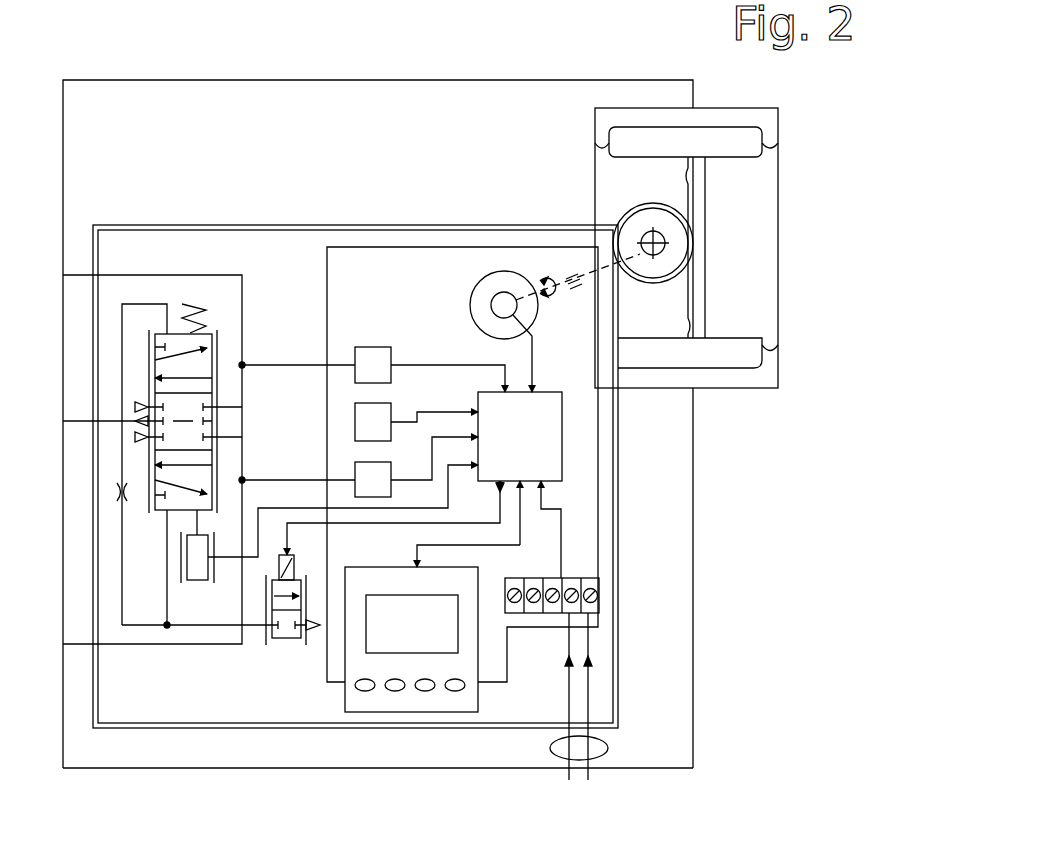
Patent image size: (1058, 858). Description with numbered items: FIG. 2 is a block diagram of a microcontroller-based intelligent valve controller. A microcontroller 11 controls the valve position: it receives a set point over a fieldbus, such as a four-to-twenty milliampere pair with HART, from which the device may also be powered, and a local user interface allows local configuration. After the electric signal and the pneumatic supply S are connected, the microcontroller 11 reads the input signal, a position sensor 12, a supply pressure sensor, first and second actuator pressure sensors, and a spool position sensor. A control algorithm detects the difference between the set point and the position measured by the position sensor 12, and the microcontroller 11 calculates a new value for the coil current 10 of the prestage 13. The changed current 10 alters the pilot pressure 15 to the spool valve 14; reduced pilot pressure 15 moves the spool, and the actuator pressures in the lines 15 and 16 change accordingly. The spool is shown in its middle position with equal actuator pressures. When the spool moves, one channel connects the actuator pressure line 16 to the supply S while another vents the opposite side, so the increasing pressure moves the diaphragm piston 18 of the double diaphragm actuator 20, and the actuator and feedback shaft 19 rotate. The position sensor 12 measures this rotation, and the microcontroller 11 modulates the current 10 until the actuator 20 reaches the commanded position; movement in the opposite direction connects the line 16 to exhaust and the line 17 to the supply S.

The prestage coil current 10 is at (398, 528).
The microcontroller 11 is at (548, 390).
The position sensor 12 is at (470, 303).
The pressure regulator 13 is at (265, 648).
The spool valve 14 is at (148, 460).
The pilot pressure 15 is at (122, 543).
The actuator pressure line 16 is at (410, 78).
The actuator pressure line 17 is at (443, 768).
The diaphragm piston 18 is at (768, 126).
The feedback shaft 19 is at (665, 202).
The double diaphragm actuator 20 is at (706, 229).